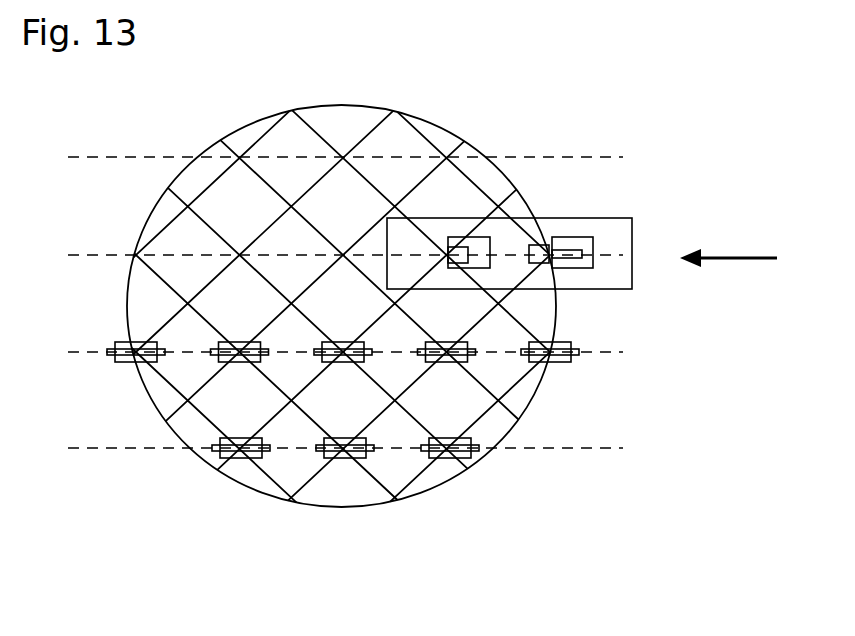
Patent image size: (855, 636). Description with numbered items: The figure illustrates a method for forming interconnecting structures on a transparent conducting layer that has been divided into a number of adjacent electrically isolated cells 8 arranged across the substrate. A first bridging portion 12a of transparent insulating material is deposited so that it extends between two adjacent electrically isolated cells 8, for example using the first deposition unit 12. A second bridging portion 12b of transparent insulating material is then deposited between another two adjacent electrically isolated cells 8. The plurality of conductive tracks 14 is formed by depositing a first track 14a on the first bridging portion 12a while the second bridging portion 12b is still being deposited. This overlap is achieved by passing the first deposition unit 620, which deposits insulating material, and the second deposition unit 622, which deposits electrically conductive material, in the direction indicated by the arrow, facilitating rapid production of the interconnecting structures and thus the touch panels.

The electrically isolated cells 8 is at (410, 138).
The first deposition unit 12 is at (232, 458).
The conductive tracks 14 is at (257, 460).
The first bridging portion 12a is at (542, 258).
The second bridging portion 12b is at (453, 248).
The first deposition unit 620 is at (480, 248).
The second deposition unit 622 is at (587, 243).
The first track 14a is at (583, 251).